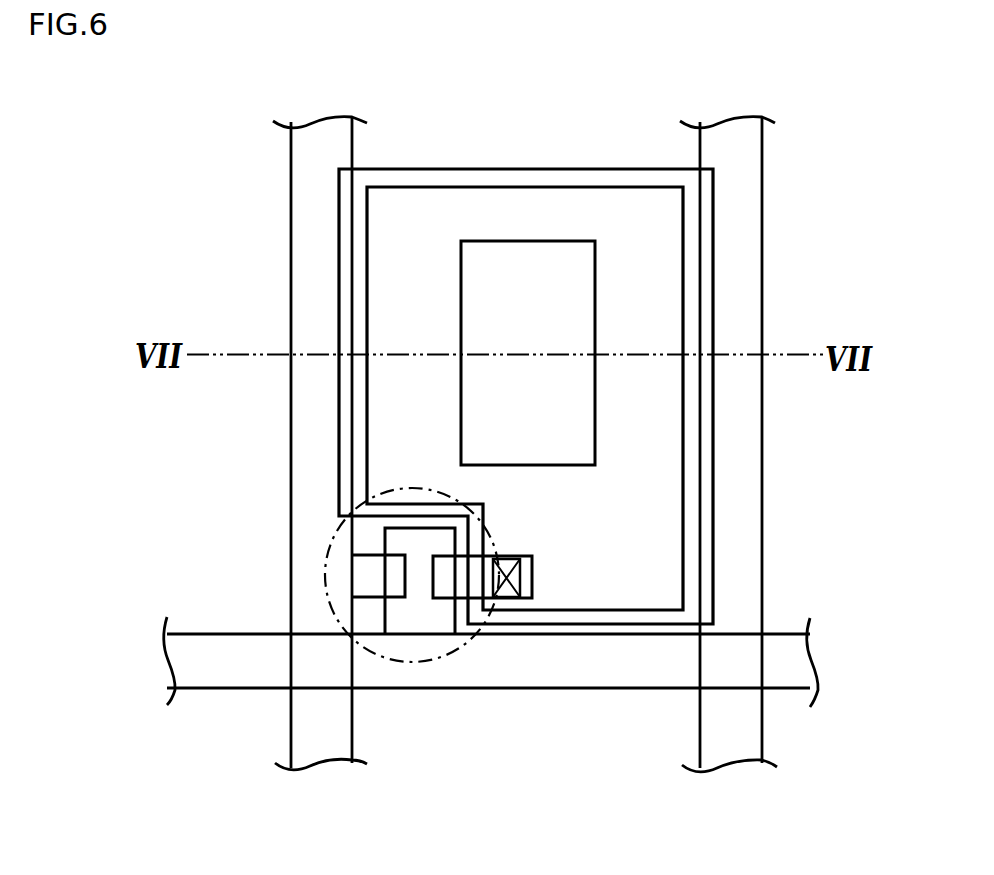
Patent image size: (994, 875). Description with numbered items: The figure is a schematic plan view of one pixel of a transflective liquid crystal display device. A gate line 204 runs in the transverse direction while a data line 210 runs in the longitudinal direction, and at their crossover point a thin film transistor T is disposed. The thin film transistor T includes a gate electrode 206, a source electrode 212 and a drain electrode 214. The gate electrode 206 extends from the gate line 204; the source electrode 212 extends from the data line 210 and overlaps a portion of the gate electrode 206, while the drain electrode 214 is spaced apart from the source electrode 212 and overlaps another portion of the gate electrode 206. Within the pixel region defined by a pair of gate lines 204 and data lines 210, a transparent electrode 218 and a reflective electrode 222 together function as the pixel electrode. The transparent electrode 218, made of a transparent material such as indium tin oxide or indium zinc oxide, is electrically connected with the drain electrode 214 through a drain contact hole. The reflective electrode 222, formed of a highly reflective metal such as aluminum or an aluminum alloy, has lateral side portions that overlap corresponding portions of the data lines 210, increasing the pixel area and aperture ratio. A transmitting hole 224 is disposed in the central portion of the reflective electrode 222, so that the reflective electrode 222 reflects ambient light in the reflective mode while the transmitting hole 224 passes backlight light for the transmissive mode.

The gate line 204 is at (600, 675).
The gate electrode 206 is at (417, 585).
The data line 210 is at (306, 329).
The source electrode 212 is at (370, 598).
The drain electrode 214 is at (525, 588).
The transparent electrode 218 is at (683, 262).
The reflective electrode 222 is at (714, 293).
The transmitting hole 224 is at (543, 265).
The thin film transistor T is at (328, 560).